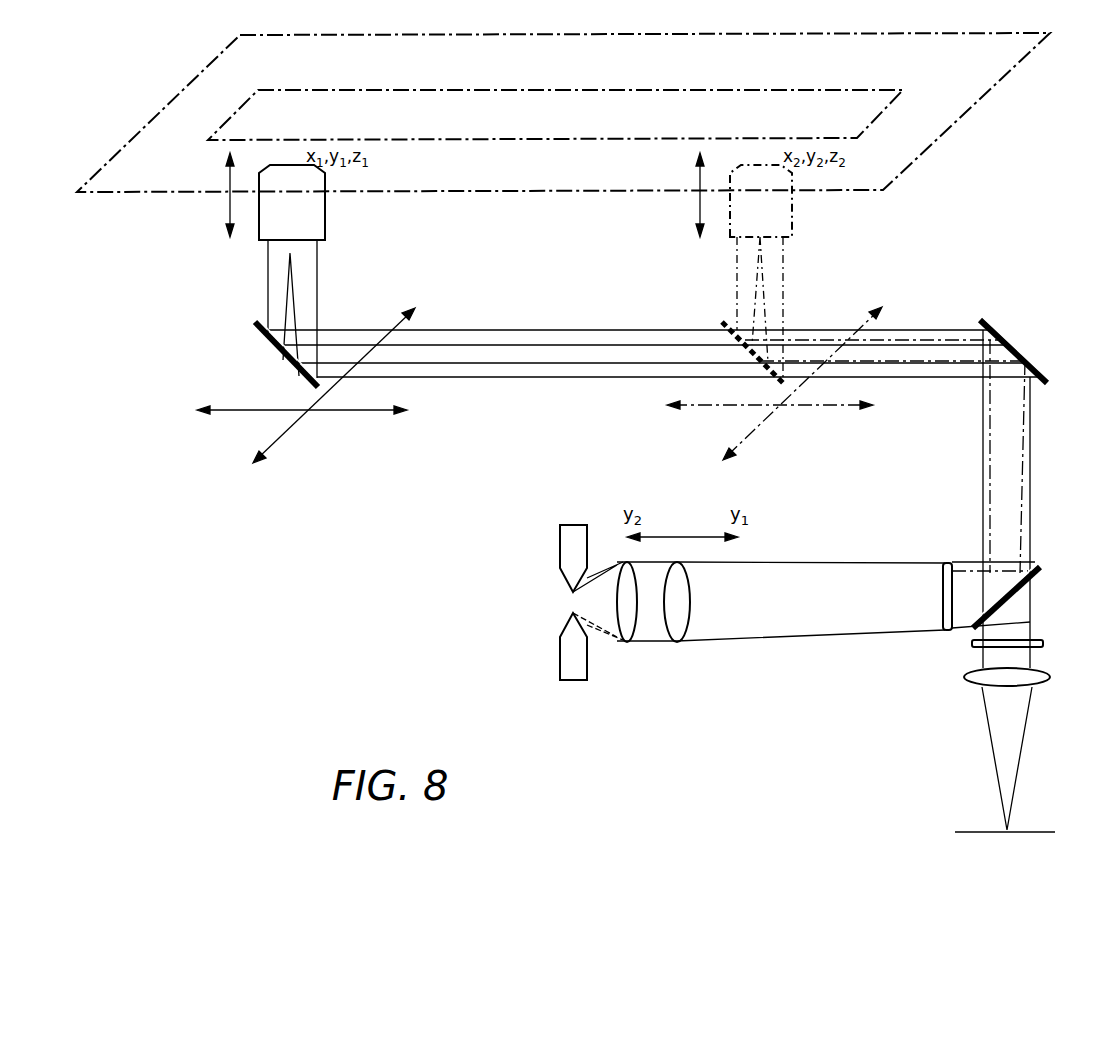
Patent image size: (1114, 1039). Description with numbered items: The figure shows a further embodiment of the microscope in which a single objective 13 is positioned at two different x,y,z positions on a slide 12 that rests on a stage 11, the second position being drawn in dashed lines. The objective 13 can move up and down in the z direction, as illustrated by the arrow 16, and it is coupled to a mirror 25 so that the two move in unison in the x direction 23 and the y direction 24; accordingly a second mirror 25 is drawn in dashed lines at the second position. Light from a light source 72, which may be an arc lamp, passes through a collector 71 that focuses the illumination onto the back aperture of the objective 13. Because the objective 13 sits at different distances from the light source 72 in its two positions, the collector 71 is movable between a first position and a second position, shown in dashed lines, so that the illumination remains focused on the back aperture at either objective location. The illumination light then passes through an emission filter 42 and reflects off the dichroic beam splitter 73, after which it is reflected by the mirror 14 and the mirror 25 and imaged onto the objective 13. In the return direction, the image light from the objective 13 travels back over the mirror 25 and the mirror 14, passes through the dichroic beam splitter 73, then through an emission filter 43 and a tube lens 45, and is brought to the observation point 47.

The stage 11 is at (1030, 45).
The slide 12 is at (883, 102).
The objective 13 is at (327, 197).
The mirror 14 is at (1015, 347).
The arrow 16 is at (228, 202).
The x direction 23 is at (362, 412).
The y direction 24 is at (287, 438).
The mirror 25 is at (277, 352).
The emission filter 42 is at (947, 547).
The emission filter 43 is at (1043, 647).
The tube lens 45 is at (1050, 680).
The observation point 47 is at (1028, 830).
The collector 71 is at (623, 640).
The light source 72 is at (558, 662).
The dichroic beam splitter 73 is at (1040, 565).